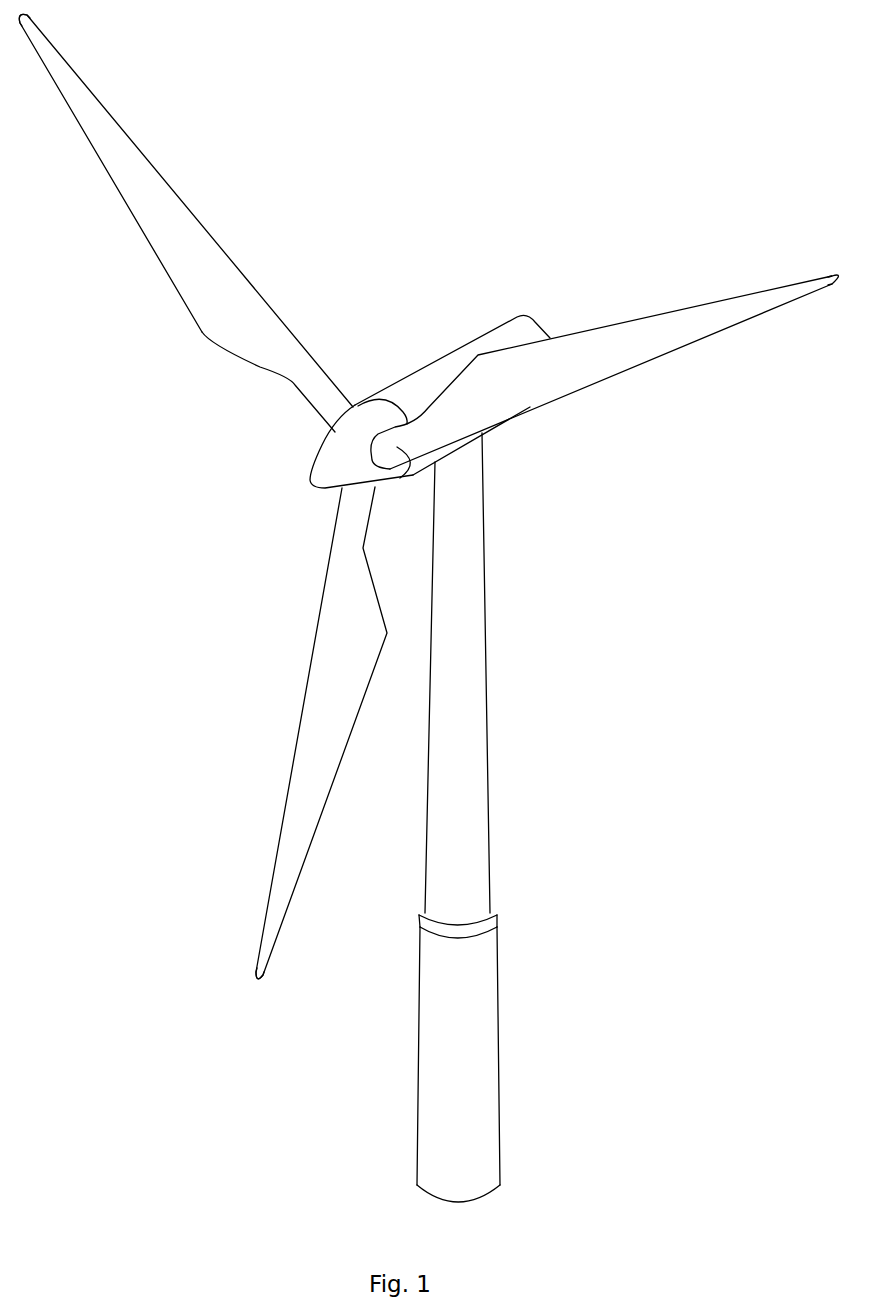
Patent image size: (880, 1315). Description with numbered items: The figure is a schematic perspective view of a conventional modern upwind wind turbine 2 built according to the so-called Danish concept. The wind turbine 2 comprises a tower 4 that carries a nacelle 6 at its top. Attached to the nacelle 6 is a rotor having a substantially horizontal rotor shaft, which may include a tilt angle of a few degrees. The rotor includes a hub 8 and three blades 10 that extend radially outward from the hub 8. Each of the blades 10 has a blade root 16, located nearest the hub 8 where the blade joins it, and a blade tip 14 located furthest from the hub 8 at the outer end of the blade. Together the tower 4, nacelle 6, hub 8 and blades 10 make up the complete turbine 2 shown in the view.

The wind turbine 2 is at (583, 755).
The tower 4 is at (474, 678).
The nacelle 6 is at (424, 379).
The hub 8 is at (332, 464).
The blade 10 is at (218, 314).
The blade tip 14 is at (63, 72).
The blade root 16 is at (337, 420).